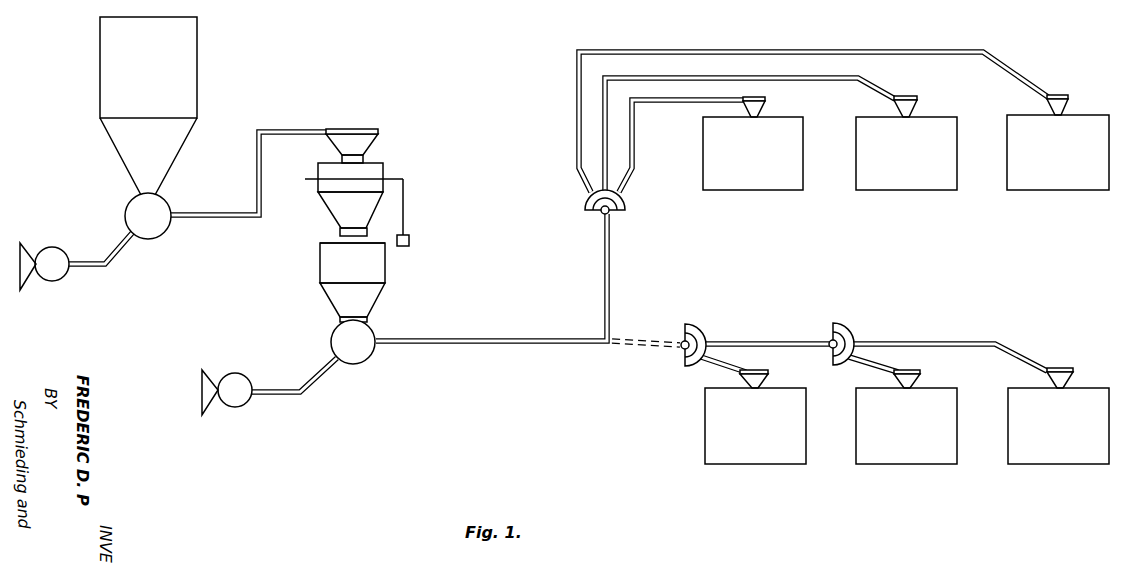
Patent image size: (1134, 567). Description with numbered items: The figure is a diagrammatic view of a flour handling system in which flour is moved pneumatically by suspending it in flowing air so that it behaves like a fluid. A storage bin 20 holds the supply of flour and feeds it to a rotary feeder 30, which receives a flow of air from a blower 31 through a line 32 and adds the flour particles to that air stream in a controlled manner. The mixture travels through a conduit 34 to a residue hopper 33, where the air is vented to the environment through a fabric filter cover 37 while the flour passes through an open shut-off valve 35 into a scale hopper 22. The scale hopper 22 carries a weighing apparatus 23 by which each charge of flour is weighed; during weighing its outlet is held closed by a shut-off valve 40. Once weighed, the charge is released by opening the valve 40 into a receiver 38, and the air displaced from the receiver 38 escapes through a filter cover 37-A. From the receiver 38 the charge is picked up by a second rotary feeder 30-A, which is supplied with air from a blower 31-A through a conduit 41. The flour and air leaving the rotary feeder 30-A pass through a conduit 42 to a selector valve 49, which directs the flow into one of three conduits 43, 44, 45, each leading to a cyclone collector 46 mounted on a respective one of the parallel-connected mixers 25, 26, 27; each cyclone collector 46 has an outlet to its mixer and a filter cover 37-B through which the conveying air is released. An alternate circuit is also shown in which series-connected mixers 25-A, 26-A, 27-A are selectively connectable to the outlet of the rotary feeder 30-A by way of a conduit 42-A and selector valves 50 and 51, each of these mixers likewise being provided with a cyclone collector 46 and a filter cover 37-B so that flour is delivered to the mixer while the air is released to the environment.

The storage bin 20 is at (183, 62).
The scale hopper 22 is at (384, 170).
The weighing apparatus 23 is at (403, 207).
The mixer 25 is at (735, 192).
The mixer 26 is at (892, 192).
The mixer 27 is at (1042, 190).
The mixer 25-A is at (724, 466).
The mixer 26-A is at (881, 466).
The mixer 27-A is at (1034, 466).
The rotary feeder 30 is at (156, 232).
The rotary feeder 30-A is at (352, 356).
The blower 31 is at (55, 275).
The blower 31-A is at (232, 407).
The line 32 is at (118, 253).
The residue hopper 33 is at (355, 143).
The conduit 34 is at (274, 130).
The shut-off valve 35 is at (343, 159).
The filter cover 37 is at (366, 103).
The filter cover 37-A is at (322, 243).
The filter cover 37-B is at (1060, 95).
The receiver 38 is at (372, 268).
The shut-off valve 40 is at (345, 231).
The conduit 41 is at (312, 373).
The conduit 42 is at (530, 343).
The conduit 42-A is at (632, 345).
The conduit 43 is at (637, 52).
The conduit 44 is at (797, 80).
The conduit 45 is at (660, 102).
The cyclone collector 46 is at (765, 104).
The selector valve 49 is at (585, 208).
The selector valve 50 is at (702, 327).
The selector valve 51 is at (878, 312).